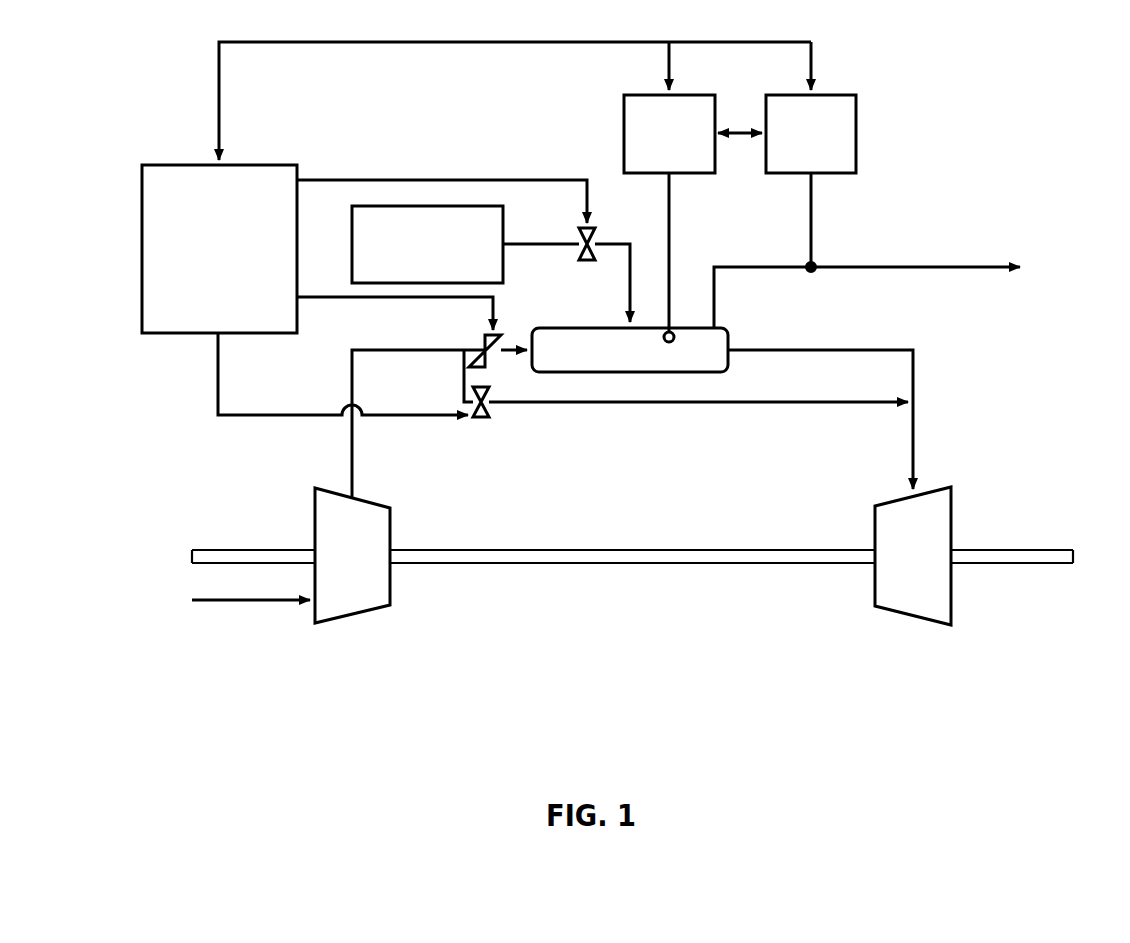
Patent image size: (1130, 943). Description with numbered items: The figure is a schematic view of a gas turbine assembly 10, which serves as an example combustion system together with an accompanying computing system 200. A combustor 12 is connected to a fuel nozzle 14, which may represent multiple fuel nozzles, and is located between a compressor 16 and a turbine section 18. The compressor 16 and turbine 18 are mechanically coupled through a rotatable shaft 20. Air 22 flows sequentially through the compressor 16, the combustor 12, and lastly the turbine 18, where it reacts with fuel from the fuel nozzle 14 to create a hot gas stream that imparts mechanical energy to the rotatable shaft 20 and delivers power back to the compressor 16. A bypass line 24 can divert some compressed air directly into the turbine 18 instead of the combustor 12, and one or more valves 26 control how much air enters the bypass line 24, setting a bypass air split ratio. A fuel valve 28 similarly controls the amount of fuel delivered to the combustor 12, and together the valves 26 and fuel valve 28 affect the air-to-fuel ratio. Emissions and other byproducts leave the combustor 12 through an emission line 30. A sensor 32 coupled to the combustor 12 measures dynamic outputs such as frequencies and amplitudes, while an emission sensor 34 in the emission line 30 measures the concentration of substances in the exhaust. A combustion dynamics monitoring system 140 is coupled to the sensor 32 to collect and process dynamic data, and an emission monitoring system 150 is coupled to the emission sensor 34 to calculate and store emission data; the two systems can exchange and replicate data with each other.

The gas turbine assembly 10 is at (584, 635).
The combustor 12 is at (616, 368).
The fuel nozzle 14 is at (412, 259).
The compressor 16 is at (338, 573).
The turbine section 18 is at (898, 573).
The rotatable shaft 20 is at (525, 547).
The air 22 is at (262, 603).
The bypass line 24 is at (803, 407).
The valves 26 is at (485, 336).
The fuel valve 28 is at (596, 229).
The emission line 30 is at (940, 262).
The sensor 32 is at (673, 331).
The emission sensor 34 is at (815, 258).
The combustion dynamics monitoring system 140 is at (647, 148).
The emission monitoring system 150 is at (789, 148).
The computing system 200 is at (197, 268).